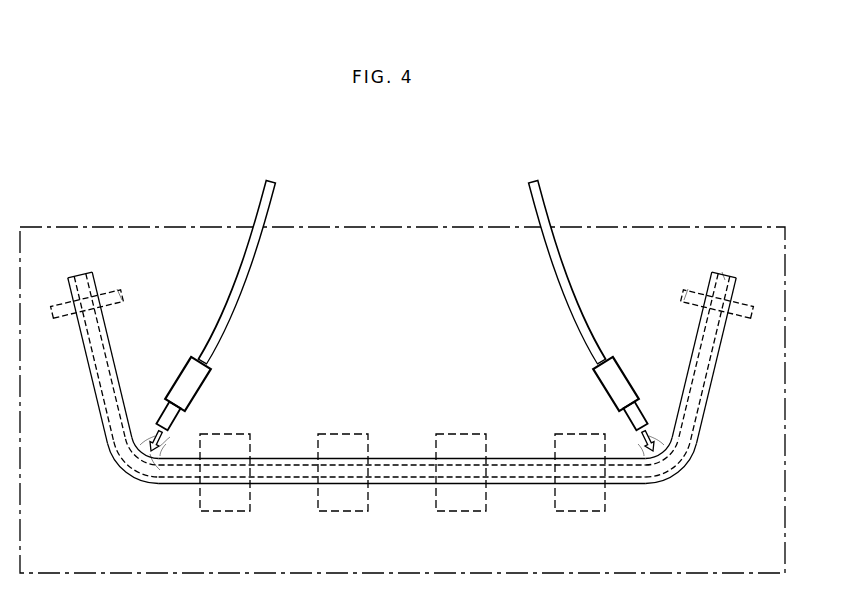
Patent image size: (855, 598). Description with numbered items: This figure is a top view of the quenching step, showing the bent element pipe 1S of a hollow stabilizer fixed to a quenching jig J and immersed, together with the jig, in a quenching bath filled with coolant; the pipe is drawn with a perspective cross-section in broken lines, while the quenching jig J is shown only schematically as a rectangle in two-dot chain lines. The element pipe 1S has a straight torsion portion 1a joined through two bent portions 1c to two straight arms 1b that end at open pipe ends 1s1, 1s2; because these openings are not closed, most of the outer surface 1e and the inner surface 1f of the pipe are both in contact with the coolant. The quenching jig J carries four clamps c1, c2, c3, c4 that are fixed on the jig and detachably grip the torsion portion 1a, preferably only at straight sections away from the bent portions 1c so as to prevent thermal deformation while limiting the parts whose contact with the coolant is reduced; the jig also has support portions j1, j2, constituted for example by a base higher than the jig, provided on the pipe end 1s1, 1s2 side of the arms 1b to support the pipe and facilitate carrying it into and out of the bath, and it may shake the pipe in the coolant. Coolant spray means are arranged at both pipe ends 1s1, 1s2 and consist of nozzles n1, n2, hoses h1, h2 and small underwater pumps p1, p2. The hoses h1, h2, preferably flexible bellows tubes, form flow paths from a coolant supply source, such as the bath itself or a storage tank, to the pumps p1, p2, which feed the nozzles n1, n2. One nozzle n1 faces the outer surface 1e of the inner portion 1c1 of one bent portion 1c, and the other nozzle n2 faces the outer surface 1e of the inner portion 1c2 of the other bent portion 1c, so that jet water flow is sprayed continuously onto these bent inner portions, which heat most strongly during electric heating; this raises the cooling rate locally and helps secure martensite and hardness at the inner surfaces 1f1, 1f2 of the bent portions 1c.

The quenching jig J is at (345, 227).
The support portion j1 is at (117, 289).
The support portion j2 is at (688, 289).
The torsion portion 1a is at (402, 457).
The arm 1b is at (91, 387).
The bent portion 1c is at (119, 474).
The inner portion of bent portion 1c1 is at (152, 445).
The inner portion of bent portion 1c2 is at (652, 445).
The outer surface 1e is at (150, 446).
The inner surface 1f is at (165, 480).
The inner surface of bent portion 1f1 is at (165, 458).
The inner surface of bent portion 1f2 is at (639, 458).
The pipe end 1s1 is at (77, 278).
The pipe end 1s2 is at (723, 272).
The element pipe 1S is at (407, 487).
The hose h1 is at (250, 285).
The hose h2 is at (552, 285).
The small underwater pump p1 is at (196, 376).
The small underwater pump p2 is at (604, 376).
The nozzle n1 is at (168, 420).
The nozzle n2 is at (636, 420).
The clamp c1 is at (225, 512).
The clamp c2 is at (343, 512).
The clamp c3 is at (463, 512).
The clamp c4 is at (581, 512).